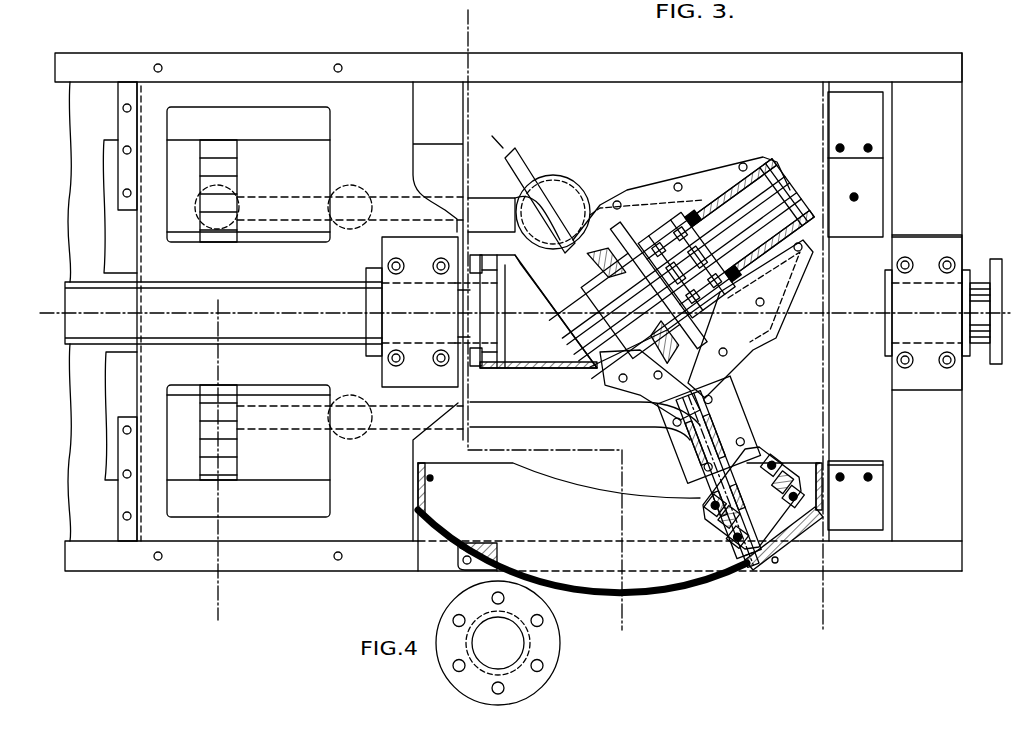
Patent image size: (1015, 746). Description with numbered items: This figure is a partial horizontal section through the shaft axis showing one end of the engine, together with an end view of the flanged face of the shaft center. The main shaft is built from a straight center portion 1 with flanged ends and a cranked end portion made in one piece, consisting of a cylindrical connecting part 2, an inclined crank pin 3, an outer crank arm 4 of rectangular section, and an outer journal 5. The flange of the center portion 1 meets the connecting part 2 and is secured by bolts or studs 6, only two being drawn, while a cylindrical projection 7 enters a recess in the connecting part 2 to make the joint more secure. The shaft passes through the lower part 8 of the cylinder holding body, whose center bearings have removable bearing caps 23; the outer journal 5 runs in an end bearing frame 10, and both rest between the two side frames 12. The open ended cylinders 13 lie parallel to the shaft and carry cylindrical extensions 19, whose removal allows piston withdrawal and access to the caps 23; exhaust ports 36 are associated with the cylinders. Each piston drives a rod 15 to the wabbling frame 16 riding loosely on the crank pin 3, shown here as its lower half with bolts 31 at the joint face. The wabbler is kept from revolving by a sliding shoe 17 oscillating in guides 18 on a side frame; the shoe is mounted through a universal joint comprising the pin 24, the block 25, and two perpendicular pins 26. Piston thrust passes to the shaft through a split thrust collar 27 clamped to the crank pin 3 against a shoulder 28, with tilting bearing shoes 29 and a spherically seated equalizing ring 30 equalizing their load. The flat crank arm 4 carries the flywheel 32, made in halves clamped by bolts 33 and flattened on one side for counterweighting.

In FIG. 3, the straight center portion 1 is at (72, 322).
In FIG. 4, the straight center portion 1 is at (440, 668).
In FIG. 3, the cylindrical connecting part 2 is at (540, 340).
In FIG. 3, the inclined crank pin 3 is at (669, 230).
In FIG. 3, the outer crank arm 4 is at (878, 232).
In FIG. 3, the outer journal 5 is at (970, 345).
In FIG. 3, the bolts or studs 6 is at (477, 300).
In FIG. 3, the cylindrical projection 7 is at (516, 365).
In FIG. 4, the cylindrical projection 7 is at (522, 643).
In FIG. 3, the lower part of cylinder holding body 8 is at (140, 127).
In FIG. 3, the end bearing frame 10 is at (955, 118).
In FIG. 3, the side frames 12 is at (268, 60).
In FIG. 3, the open ended cylinders 13 is at (108, 185).
In FIG. 3, the rod 15 is at (487, 210).
In FIG. 3, the wabbling frame 16 is at (656, 193).
In FIG. 3, the sliding shoe 17 is at (738, 421).
In FIG. 3, the guides 18 is at (648, 592).
In FIG. 3, the cylindrical extensions 19 is at (435, 145).
In FIG. 3, the bearing caps 23 is at (413, 372).
In FIG. 3, the pin 24 is at (751, 462).
In FIG. 3, the block 25 is at (723, 514).
In FIG. 3, the pins 26 is at (780, 460).
In FIG. 3, the split thrust collar 27 is at (643, 231).
In FIG. 3, the shoulder 28 is at (698, 221).
In FIG. 3, the bearing shoes 29 is at (646, 219).
In FIG. 3, the equalizing ring 30 is at (598, 225).
In FIG. 3, the bolts 31 is at (745, 170).
In FIG. 3, the flywheel 32 is at (855, 105).
In FIG. 3, the bolts 33 is at (872, 478).
In FIG. 3, the exhaust ports 36 is at (225, 460).